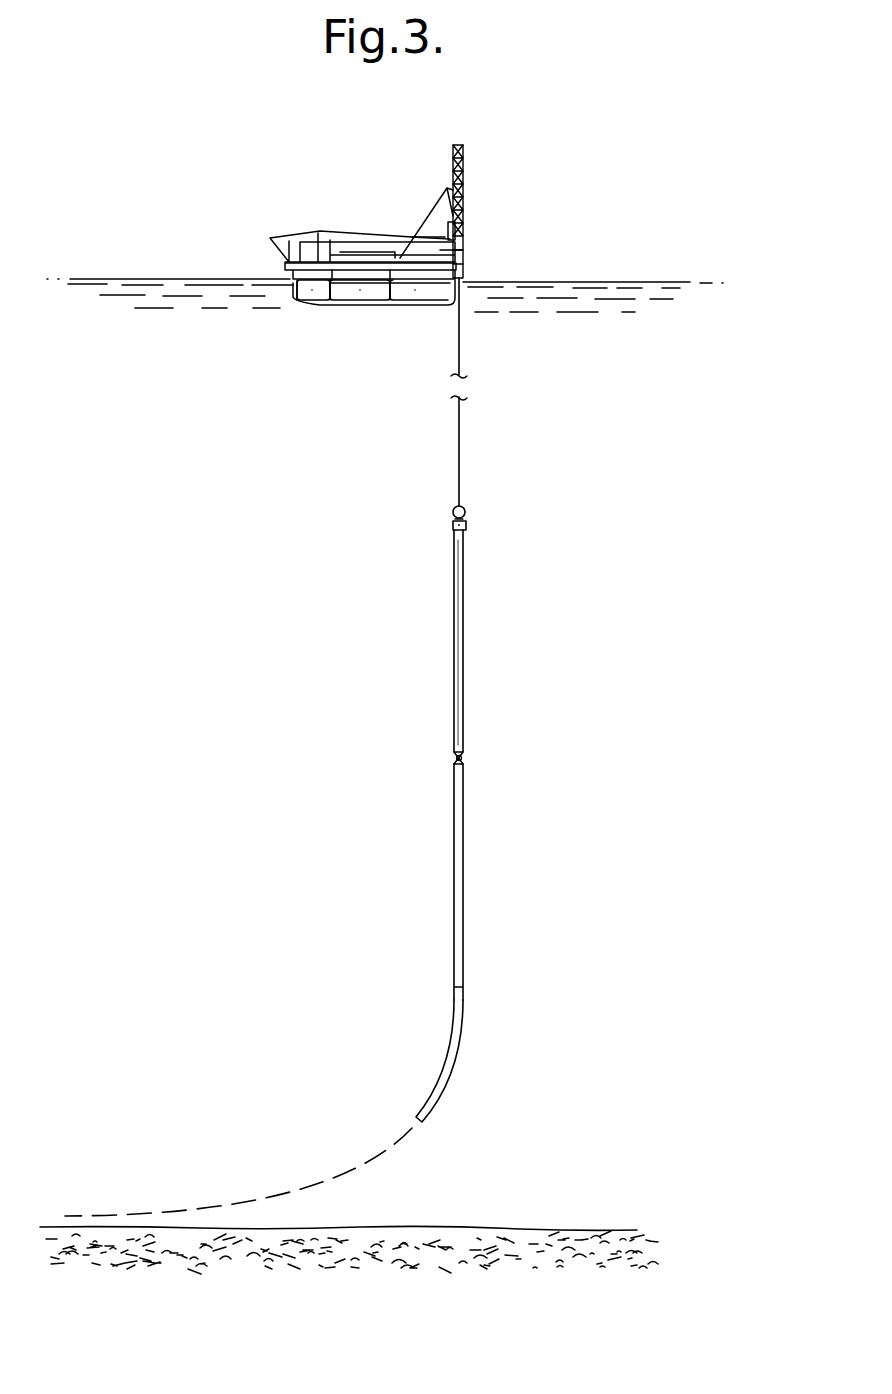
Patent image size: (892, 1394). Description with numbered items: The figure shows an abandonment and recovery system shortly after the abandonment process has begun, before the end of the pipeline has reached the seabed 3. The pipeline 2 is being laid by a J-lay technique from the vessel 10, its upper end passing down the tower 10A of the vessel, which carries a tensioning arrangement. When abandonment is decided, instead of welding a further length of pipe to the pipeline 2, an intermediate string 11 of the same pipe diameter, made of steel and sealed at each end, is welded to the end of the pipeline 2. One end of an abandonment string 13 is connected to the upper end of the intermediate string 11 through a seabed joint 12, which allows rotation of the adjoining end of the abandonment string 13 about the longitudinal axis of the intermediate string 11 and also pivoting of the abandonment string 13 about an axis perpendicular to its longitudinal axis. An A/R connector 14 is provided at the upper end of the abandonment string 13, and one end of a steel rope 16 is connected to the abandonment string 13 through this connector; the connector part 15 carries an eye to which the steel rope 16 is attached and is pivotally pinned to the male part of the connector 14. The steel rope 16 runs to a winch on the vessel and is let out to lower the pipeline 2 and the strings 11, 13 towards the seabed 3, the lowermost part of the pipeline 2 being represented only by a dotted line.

The pipeline 2 is at (442, 1063).
The seabed 3 is at (366, 1313).
The vessel 10 is at (378, 237).
The tower 10A is at (464, 185).
The intermediate string 11 is at (464, 862).
The seabed joint 12 is at (463, 752).
The abandonment string 13 is at (464, 598).
The A/R connector 14 is at (453, 525).
The connector part 15 is at (455, 507).
The steel rope 16 is at (460, 434).